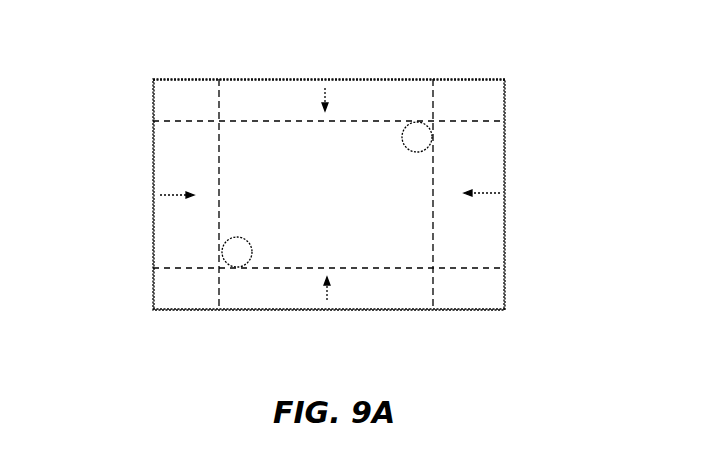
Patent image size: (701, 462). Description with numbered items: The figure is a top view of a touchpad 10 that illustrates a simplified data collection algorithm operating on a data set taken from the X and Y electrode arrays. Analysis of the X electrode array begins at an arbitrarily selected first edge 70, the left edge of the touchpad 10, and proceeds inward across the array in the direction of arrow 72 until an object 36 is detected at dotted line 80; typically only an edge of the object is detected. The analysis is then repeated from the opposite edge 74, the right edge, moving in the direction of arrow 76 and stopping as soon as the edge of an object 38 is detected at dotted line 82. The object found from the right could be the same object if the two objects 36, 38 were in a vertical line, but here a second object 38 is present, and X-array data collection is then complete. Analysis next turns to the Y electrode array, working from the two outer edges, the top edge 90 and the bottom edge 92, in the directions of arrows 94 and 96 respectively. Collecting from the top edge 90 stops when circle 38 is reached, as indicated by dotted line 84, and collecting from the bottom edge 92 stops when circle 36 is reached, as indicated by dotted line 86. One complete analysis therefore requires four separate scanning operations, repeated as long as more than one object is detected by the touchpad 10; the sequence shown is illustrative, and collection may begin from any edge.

The touchpad 10 is at (400, 79).
The object 36 is at (252, 250).
The object 38 is at (403, 143).
The first edge 70 is at (152, 210).
The arrow 72 is at (177, 209).
The edge 74 is at (505, 218).
The arrow 76 is at (482, 205).
The dotted line 80 is at (220, 213).
The dotted line 82 is at (433, 213).
The dotted line 84 is at (283, 121).
The dotted line 86 is at (312, 268).
The top edge 90 is at (267, 79).
The bottom edge 92 is at (282, 310).
The arrow 94 is at (341, 99).
The arrow 96 is at (342, 290).